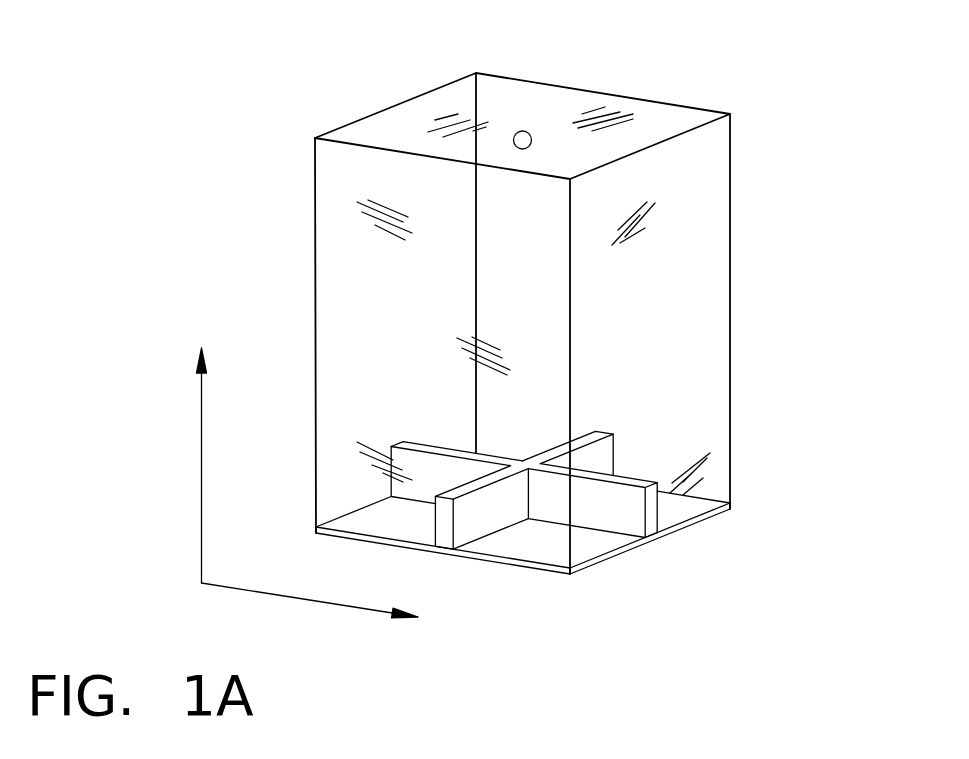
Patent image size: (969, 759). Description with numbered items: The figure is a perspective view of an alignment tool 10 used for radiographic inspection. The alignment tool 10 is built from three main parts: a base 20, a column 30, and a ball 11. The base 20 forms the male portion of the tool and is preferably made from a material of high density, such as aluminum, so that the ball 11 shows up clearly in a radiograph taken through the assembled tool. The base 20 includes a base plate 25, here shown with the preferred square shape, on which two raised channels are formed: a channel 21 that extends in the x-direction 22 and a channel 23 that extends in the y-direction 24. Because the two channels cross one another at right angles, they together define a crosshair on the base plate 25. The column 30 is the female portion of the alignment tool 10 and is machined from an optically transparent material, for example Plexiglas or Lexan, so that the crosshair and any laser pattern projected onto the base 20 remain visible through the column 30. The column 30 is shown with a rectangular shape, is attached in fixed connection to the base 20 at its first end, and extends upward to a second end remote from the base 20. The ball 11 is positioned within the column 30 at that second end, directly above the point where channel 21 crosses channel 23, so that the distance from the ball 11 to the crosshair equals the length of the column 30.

The alignment tool 10 is at (211, 84).
The ball 11 is at (527, 131).
The base 20 is at (612, 558).
The channel 21 is at (652, 512).
The x-direction 22 is at (366, 608).
The channel 23 is at (613, 453).
The y-direction 24 is at (182, 445).
The base plate 25 is at (545, 573).
The column 30 is at (695, 255).